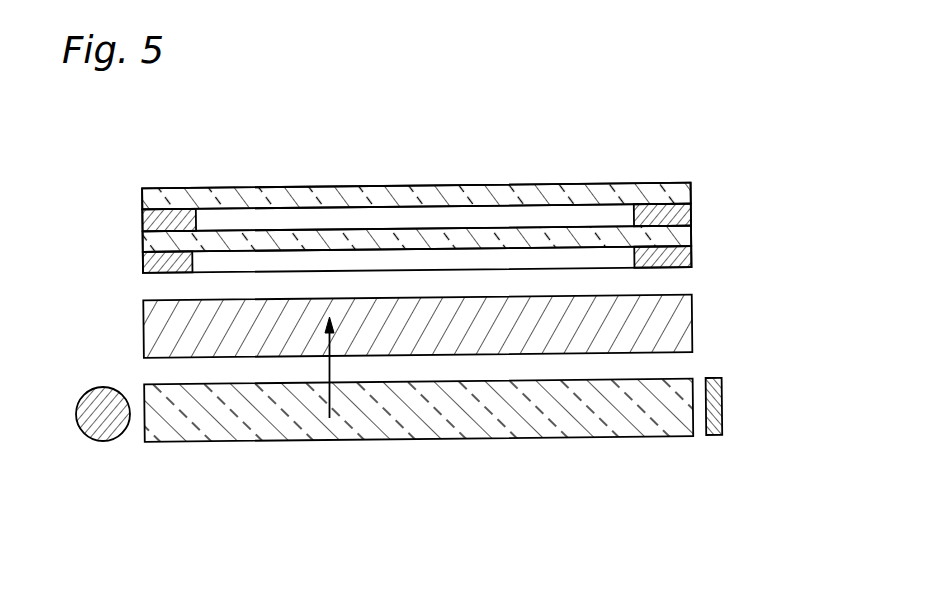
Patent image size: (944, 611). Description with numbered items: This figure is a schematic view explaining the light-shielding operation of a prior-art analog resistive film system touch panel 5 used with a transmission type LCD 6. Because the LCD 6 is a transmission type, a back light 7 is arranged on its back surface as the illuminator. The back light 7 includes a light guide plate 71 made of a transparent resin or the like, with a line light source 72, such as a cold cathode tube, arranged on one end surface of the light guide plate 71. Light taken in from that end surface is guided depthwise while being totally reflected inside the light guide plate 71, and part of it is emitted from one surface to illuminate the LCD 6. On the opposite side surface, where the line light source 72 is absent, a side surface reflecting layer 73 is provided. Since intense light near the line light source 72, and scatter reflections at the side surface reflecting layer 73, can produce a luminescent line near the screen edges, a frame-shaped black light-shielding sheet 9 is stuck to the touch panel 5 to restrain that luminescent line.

The touch panel 5 is at (671, 188).
The light-shielding sheet 9 is at (692, 253).
The LCD 6 is at (682, 324).
The back light 7 is at (428, 419).
The light guide plate 71 is at (522, 428).
The line light source 72 is at (103, 412).
The side surface reflecting layer 73 is at (722, 413).